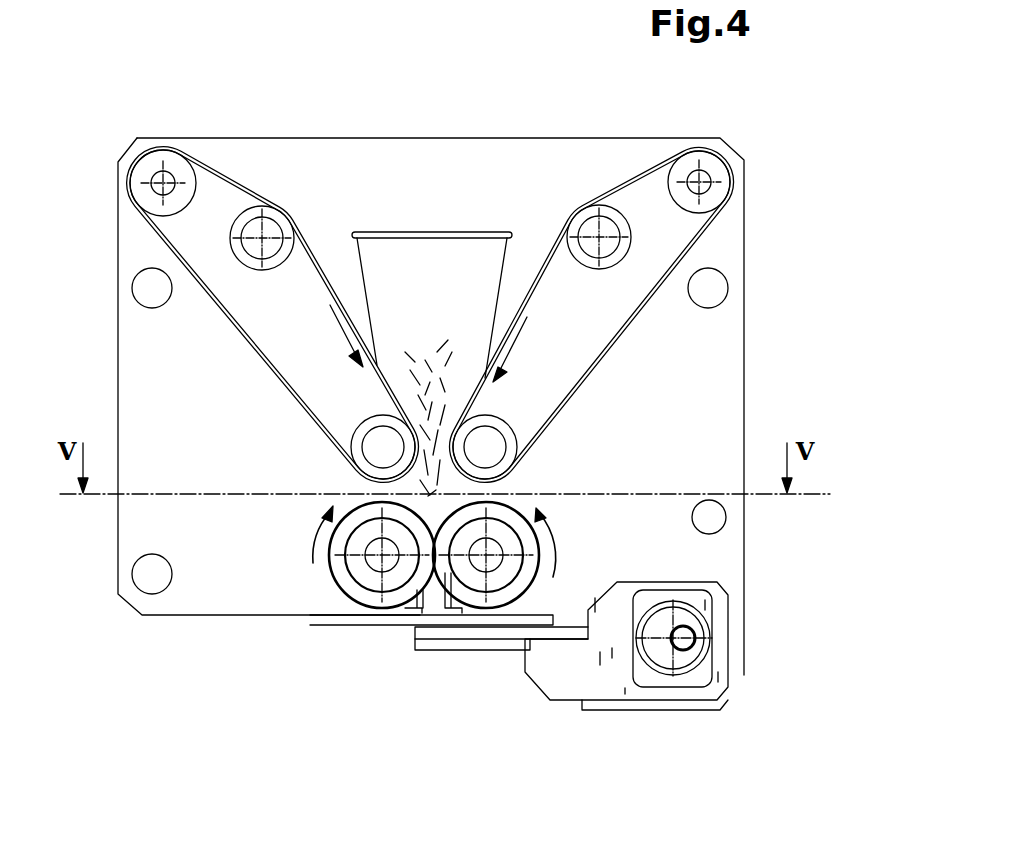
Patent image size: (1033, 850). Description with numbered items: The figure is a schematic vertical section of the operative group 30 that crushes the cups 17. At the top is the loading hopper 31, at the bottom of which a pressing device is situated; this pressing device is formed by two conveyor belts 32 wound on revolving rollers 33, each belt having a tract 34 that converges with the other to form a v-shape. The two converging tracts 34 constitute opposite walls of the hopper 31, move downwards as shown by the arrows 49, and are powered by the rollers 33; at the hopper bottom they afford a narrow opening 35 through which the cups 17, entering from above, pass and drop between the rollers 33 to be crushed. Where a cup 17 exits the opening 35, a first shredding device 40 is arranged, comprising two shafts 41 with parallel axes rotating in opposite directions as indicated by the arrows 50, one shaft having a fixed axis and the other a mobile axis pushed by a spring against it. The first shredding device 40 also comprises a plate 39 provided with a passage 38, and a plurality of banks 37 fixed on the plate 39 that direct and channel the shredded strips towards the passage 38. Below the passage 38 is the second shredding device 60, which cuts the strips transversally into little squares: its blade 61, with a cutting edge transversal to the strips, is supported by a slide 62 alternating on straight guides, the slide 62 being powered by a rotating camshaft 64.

The cups 17 is at (447, 243).
The operative group 30 is at (406, 137).
The loading hopper 31 is at (514, 166).
The conveyor belts 32 is at (187, 263).
The revolving rollers 33 is at (148, 166).
The tract 34 is at (324, 298).
The narrow opening 35 is at (367, 487).
The banks 37 is at (417, 634).
The passage 38 is at (395, 613).
The plate 39 is at (420, 613).
The first shredding device 40 is at (320, 580).
The shafts 41 is at (497, 568).
The arrows 49 is at (330, 305).
The arrows 50 is at (314, 543).
The second shredding device 60 is at (524, 663).
The blade 61 is at (377, 626).
The slide 62 is at (607, 683).
The rotating camshaft 64 is at (693, 648).